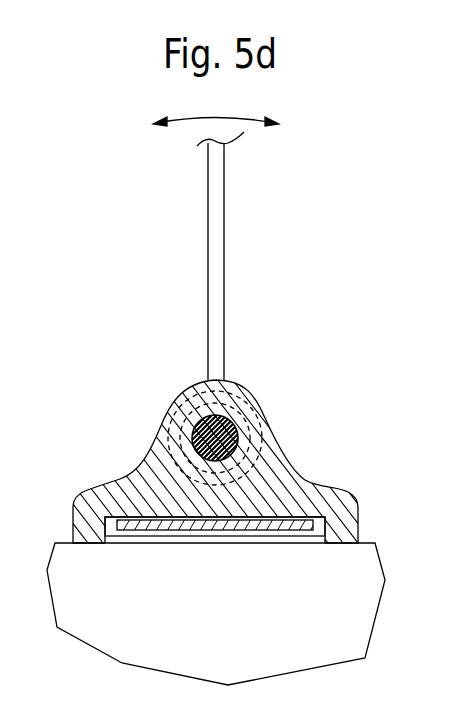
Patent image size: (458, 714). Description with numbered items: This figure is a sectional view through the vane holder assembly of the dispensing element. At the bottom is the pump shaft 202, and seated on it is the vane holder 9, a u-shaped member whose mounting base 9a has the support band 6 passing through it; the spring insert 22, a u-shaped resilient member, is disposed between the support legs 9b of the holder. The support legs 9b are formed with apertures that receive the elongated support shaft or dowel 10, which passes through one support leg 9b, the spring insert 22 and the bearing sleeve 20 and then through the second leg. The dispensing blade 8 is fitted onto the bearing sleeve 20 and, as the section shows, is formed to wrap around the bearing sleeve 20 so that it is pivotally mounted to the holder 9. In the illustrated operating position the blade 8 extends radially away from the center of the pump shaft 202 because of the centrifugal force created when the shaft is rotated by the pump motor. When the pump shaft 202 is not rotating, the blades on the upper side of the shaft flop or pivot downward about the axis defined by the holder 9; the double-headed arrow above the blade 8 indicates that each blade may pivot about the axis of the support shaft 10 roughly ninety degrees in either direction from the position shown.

The dispensing blade 8 is at (224, 248).
The vane holder 9 is at (229, 456).
The mounting base 9a is at (358, 523).
The support legs 9b is at (330, 486).
The support shaft 10 is at (222, 413).
The bearing sleeve 20 is at (241, 412).
The spring insert 22 is at (150, 537).
The support band 6 is at (254, 524).
The pump shaft 202 is at (365, 584).